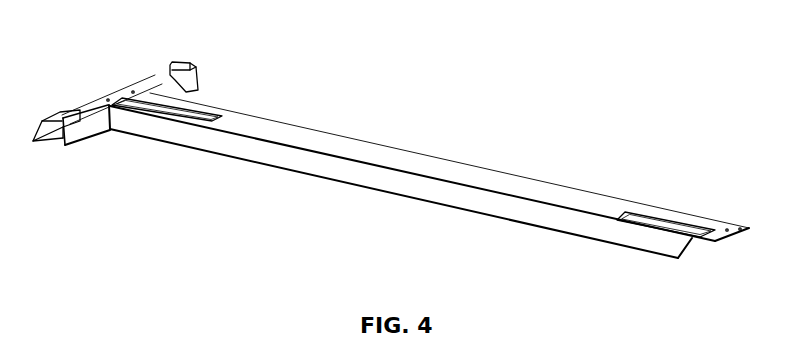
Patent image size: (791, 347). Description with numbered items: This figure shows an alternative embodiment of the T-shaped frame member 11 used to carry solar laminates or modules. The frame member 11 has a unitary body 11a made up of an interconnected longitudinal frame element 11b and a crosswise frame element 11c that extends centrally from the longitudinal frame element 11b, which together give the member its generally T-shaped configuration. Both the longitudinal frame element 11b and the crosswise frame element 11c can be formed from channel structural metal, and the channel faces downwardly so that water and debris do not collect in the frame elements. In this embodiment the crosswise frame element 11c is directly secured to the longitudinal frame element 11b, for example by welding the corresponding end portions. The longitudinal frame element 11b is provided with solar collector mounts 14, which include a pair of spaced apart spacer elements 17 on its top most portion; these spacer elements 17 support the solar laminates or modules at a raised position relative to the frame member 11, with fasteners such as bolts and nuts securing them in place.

The frame member 11 is at (406, 176).
The unitary body 11a is at (488, 186).
The longitudinal frame element 11b is at (696, 268).
The crosswise frame element 11c is at (85, 142).
The solar collector mount 14 is at (117, 92).
The spacer element 17 is at (160, 70).